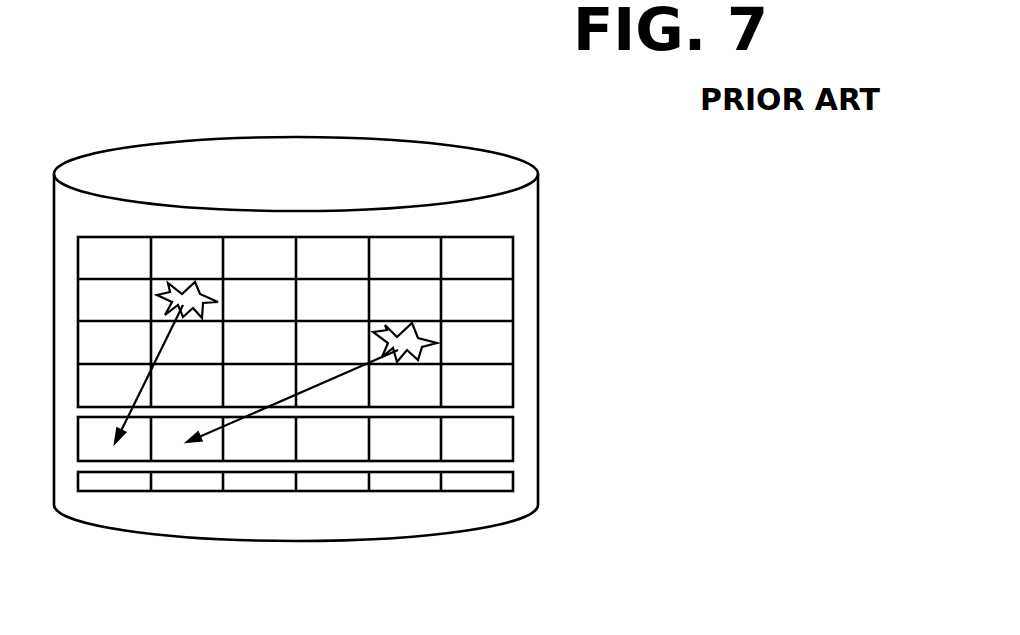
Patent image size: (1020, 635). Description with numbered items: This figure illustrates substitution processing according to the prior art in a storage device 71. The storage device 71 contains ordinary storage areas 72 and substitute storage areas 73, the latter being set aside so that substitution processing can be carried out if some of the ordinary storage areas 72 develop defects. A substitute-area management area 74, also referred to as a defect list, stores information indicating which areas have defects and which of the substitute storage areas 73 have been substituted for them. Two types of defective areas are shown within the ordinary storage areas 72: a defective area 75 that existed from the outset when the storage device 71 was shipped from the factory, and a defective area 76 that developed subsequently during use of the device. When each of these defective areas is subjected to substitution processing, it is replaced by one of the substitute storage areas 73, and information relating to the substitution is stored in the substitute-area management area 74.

The storage device 71 is at (363, 138).
The ordinary storage areas 72 is at (491, 306).
The substitute storage areas 73 is at (493, 445).
The substitute-area management area 74 is at (495, 481).
The defective area 75 is at (200, 312).
The defective area 76 is at (420, 357).